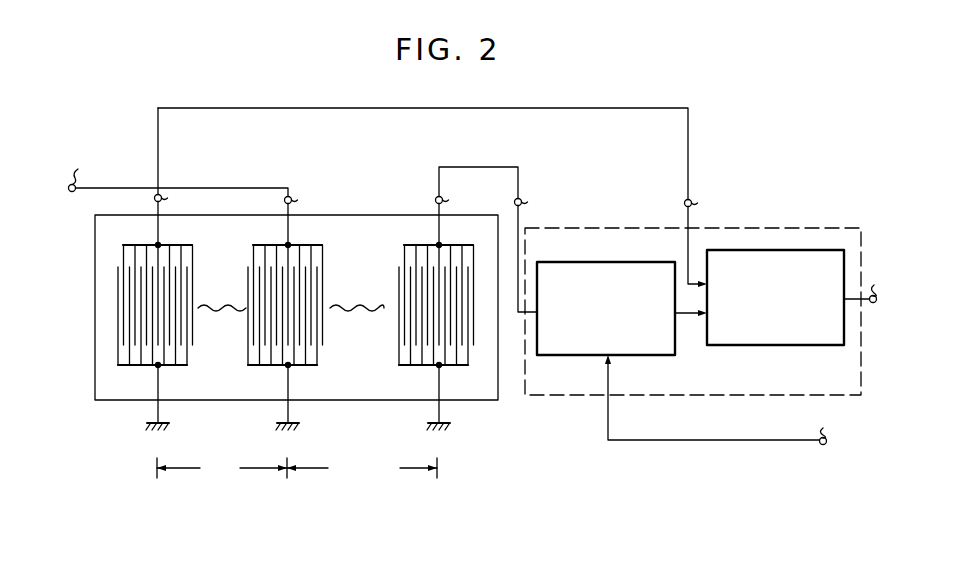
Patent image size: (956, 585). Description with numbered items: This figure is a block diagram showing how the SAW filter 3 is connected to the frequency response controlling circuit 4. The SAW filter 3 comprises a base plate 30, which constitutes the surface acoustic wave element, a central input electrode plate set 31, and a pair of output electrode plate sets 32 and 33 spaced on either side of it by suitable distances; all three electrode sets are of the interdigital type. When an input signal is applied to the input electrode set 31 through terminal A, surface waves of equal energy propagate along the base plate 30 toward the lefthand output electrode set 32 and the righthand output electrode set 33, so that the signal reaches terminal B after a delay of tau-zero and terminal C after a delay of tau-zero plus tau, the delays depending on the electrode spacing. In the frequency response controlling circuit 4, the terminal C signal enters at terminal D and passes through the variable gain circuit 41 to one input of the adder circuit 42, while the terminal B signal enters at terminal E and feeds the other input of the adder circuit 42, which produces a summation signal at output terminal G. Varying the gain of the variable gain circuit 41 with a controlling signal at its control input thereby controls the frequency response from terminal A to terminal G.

The SAW filter 3 is at (376, 156).
The base plate 30 is at (95, 338).
The input electrode plate set 31 is at (310, 366).
The output electrode plate set 32 is at (180, 366).
The output electrode plate set 33 is at (460, 366).
The frequency response controlling circuit 4 is at (833, 228).
The variable gain circuit 41 is at (626, 356).
The adder circuit 42 is at (788, 346).